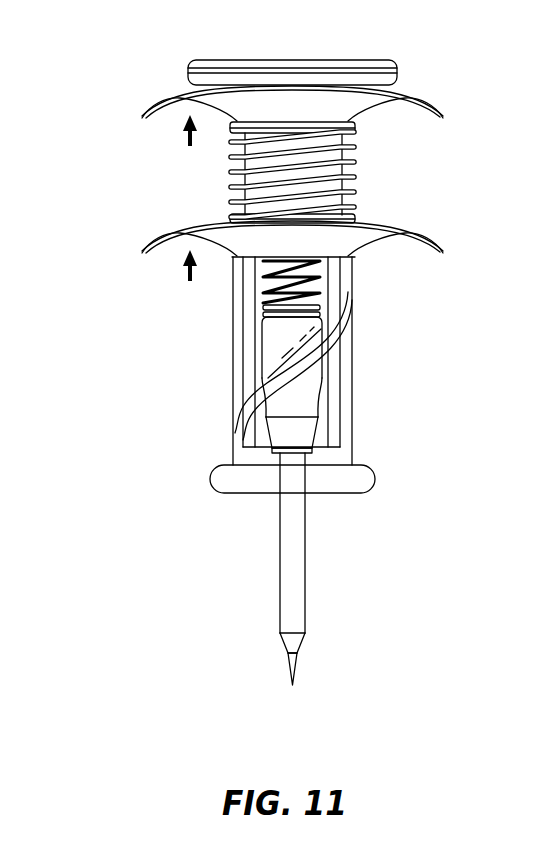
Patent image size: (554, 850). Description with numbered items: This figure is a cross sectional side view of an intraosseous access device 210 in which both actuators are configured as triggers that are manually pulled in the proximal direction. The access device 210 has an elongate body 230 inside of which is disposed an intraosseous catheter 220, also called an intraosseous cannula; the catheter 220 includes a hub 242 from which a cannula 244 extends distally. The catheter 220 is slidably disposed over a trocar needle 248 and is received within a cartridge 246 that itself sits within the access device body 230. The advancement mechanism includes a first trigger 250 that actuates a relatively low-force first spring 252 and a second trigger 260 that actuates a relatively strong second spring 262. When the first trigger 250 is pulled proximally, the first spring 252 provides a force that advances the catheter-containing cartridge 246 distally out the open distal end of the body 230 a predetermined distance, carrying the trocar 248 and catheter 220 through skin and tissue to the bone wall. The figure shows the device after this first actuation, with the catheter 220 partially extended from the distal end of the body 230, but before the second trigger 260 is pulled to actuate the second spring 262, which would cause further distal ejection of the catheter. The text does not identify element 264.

The intraosseous access device 210 is at (395, 158).
The intraosseous catheter 220 is at (336, 428).
The elongate body 230 is at (236, 418).
The hub 242 is at (342, 365).
The cannula 244 is at (305, 603).
The cartridge 246 is at (243, 296).
The trocar needle 248 is at (295, 665).
The first trigger 250 is at (166, 97).
The first spring 252 is at (232, 178).
The second trigger 260 is at (162, 232).
The second spring 262 is at (348, 294).
The knob 264 is at (200, 60).